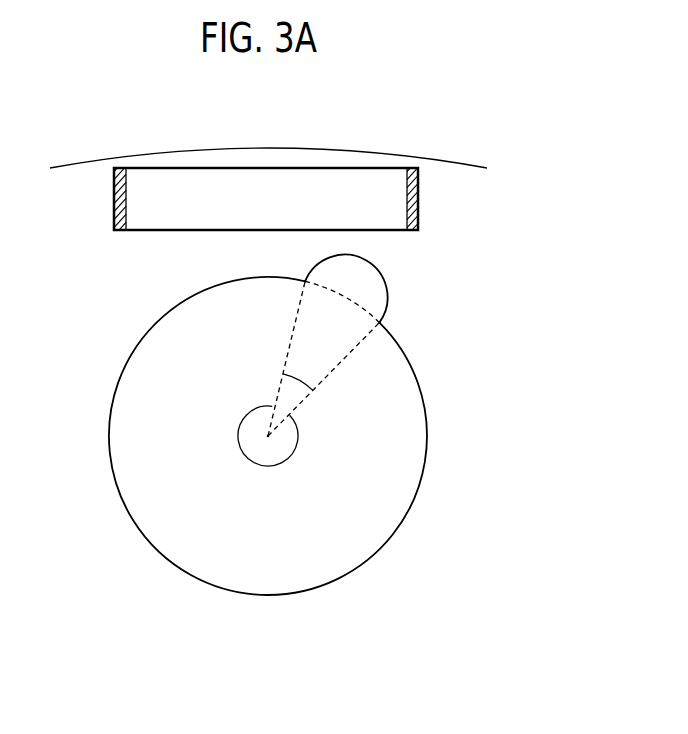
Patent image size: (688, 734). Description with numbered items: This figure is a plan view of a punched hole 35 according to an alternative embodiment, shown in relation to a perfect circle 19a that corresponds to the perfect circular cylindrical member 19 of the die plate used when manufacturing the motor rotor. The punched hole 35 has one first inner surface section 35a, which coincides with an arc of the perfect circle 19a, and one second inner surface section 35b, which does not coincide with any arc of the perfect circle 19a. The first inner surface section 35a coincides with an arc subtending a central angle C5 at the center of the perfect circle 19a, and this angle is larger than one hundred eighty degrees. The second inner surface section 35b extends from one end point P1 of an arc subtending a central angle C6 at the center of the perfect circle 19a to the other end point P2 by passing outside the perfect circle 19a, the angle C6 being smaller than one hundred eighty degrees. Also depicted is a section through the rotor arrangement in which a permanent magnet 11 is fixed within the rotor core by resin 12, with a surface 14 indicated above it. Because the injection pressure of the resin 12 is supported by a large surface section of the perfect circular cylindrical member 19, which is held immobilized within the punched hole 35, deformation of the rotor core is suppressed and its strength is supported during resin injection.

The permanent magnet 11 is at (187, 197).
The resin 12 is at (420, 195).
The upper surface 14 is at (273, 167).
The perfect circular cylindrical member 19 is at (198, 548).
The perfect circle 19a is at (228, 592).
The punched hole 35 is at (322, 575).
The first inner surface section 35a is at (418, 387).
The second inner surface section 35b is at (375, 262).
The end point P1 is at (380, 323).
The end point P2 is at (305, 281).
The central angle C5 is at (267, 451).
The central angle C6 is at (300, 371).